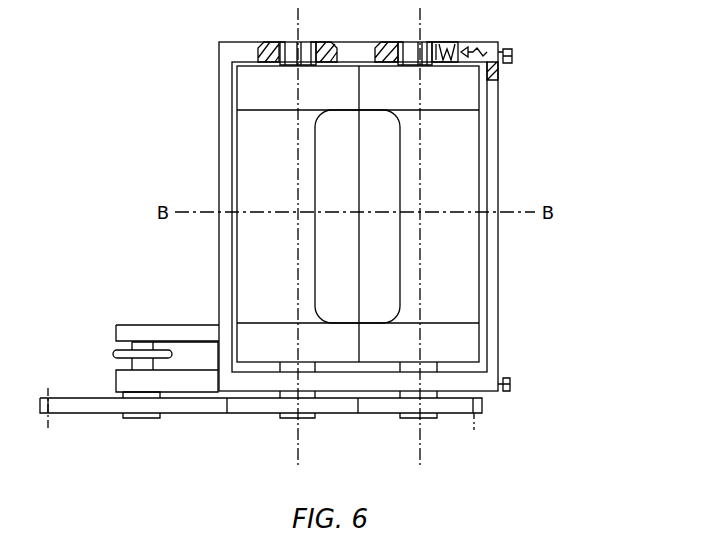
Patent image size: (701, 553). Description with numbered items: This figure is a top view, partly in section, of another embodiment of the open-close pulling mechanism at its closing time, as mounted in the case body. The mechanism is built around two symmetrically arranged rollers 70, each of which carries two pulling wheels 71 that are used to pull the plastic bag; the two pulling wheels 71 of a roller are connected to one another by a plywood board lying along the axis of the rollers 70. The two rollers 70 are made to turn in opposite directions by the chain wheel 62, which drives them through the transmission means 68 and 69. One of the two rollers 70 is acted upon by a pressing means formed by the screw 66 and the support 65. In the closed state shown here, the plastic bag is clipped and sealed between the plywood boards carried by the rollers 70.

The chain wheel 62 is at (118, 354).
The support 65 is at (448, 57).
The screw 66 is at (512, 53).
The transmission means 68 is at (182, 403).
The transmission means 69 is at (258, 402).
The roller 70 is at (332, 353).
The pulling wheel 71 is at (247, 90).